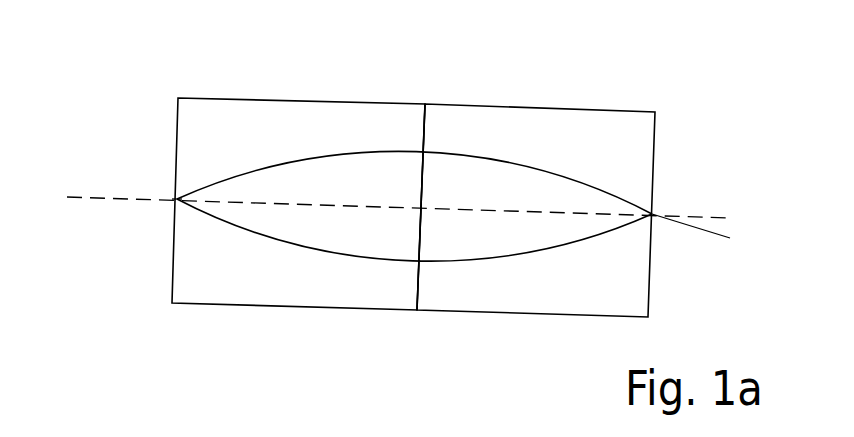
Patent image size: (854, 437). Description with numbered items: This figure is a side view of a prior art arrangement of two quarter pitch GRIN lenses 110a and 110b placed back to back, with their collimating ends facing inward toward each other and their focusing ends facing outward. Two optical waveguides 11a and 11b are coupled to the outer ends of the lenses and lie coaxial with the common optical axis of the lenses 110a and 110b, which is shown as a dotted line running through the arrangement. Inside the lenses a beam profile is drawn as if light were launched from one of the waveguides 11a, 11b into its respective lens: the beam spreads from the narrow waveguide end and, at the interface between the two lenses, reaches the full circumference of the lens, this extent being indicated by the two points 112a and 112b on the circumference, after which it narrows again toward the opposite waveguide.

The quarter pitch GRIN lens 110a is at (277, 115).
The quarter pitch GRIN lens 110b is at (615, 123).
The point on the circumference 112a is at (425, 151).
The point on the circumference 112b is at (418, 262).
The optical waveguide 11a is at (177, 198).
The optical waveguide 11b is at (652, 213).